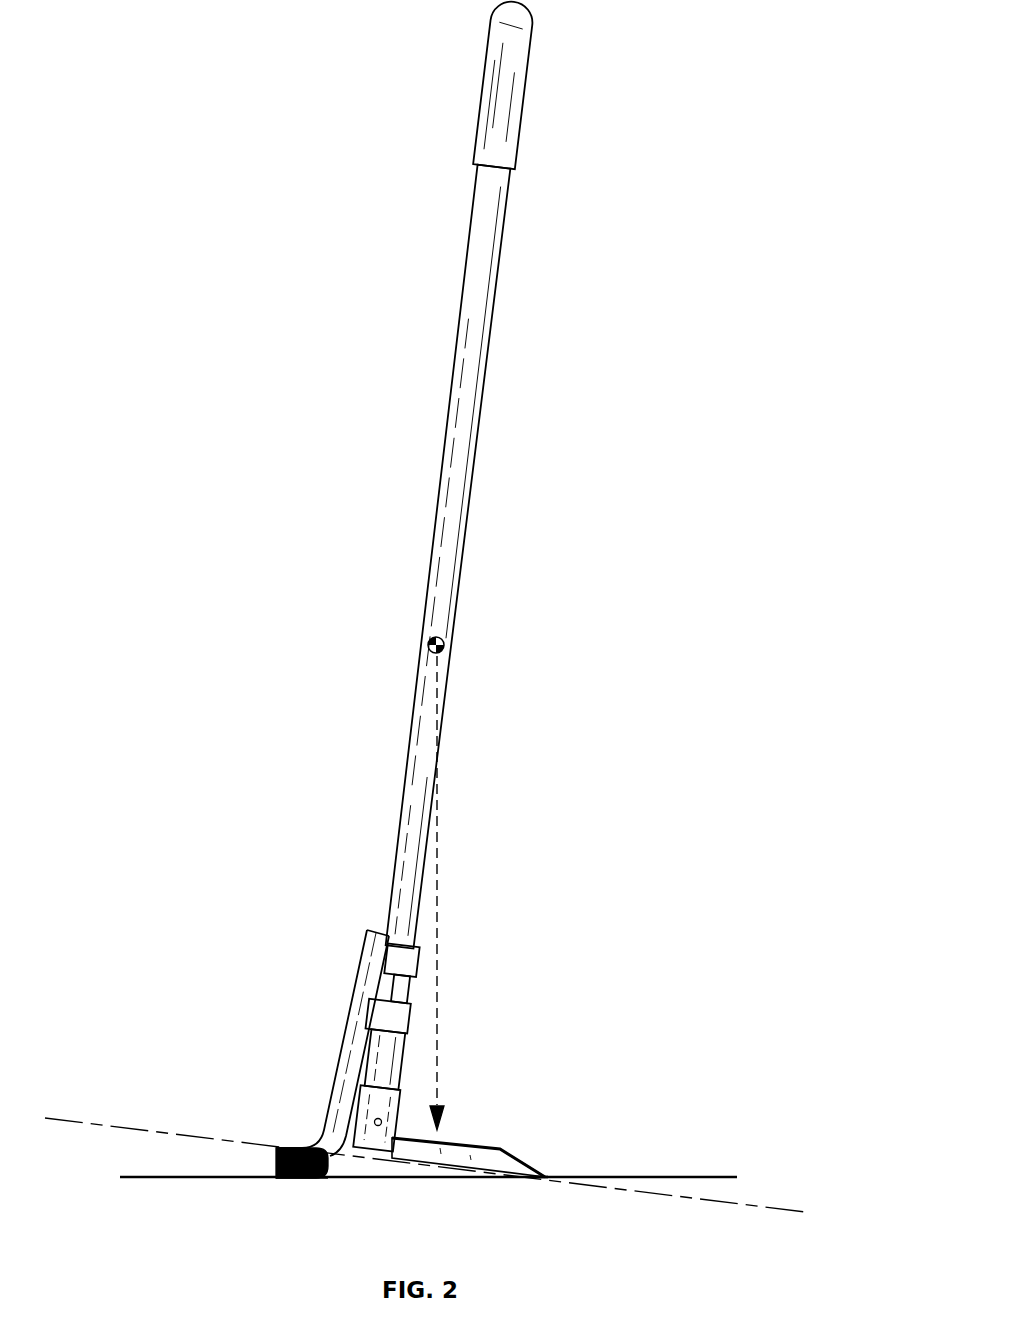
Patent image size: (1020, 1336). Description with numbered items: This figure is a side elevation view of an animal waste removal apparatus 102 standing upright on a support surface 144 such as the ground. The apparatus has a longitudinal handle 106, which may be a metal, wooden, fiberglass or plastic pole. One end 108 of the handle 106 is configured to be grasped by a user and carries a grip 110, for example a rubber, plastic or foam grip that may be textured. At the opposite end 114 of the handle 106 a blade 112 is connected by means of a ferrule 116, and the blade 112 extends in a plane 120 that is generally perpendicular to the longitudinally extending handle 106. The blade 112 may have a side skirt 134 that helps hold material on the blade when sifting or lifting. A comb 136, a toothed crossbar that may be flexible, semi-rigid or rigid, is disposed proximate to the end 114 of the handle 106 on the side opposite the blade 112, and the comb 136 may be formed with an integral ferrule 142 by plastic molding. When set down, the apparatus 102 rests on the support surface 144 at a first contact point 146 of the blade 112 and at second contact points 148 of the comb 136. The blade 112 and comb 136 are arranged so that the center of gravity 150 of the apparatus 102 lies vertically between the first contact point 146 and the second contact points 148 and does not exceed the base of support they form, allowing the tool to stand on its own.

The animal waste removal apparatus 102 is at (628, 119).
The longitudinal handle 106 is at (493, 347).
The end of the handle 108 is at (508, 237).
The grip 110 is at (533, 47).
The blade 112 is at (493, 1148).
The end of the handle 114 is at (408, 1038).
The ferrule 116 is at (403, 1095).
The plane 120 is at (779, 1205).
The skirt 134 is at (467, 1144).
The comb 136 is at (275, 1165).
The integral ferrule 142 is at (420, 952).
The support surface 144 is at (697, 1175).
The first contact point 146 is at (553, 1182).
The second contact points 148 is at (310, 1181).
The center of gravity 150 is at (446, 643).